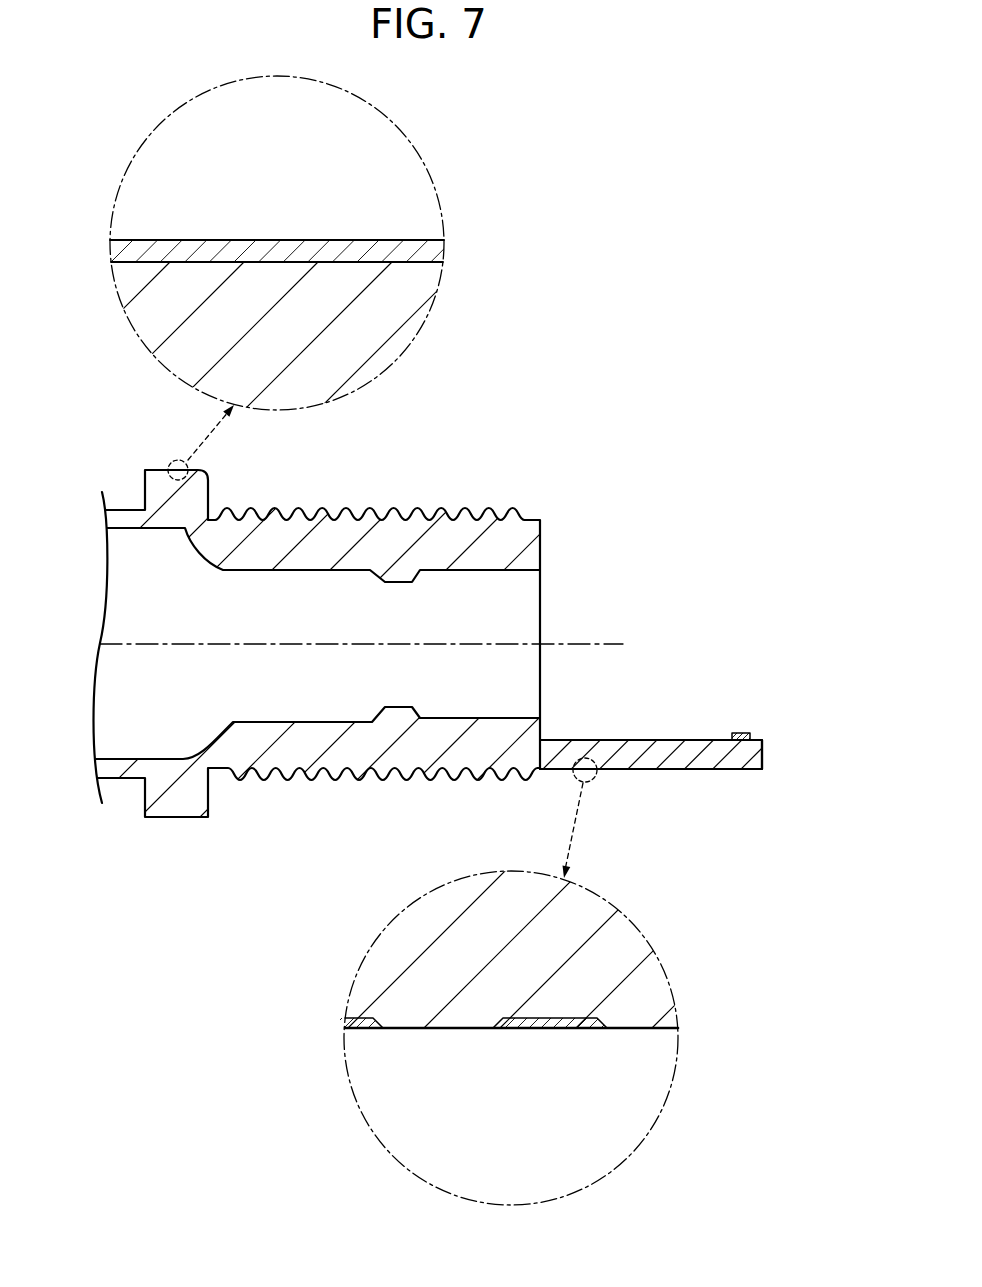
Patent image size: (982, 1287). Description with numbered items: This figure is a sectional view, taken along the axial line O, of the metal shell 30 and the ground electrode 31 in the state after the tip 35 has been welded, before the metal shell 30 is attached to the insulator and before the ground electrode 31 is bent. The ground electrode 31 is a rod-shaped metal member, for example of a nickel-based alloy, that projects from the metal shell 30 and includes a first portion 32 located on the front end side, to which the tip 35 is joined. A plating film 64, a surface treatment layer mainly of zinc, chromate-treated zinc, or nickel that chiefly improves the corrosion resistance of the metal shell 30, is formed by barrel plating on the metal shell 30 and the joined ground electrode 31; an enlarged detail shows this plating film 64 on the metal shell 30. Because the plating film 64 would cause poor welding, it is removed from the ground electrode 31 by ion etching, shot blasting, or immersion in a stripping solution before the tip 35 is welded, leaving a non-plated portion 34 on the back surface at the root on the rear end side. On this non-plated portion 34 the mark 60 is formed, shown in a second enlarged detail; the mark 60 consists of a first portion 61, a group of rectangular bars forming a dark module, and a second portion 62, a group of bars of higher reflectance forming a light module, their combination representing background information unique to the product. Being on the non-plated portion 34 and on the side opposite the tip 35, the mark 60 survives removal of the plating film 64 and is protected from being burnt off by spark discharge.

The metal shell 30 is at (157, 332).
The ground electrode 31 is at (663, 747).
The first portion 32 is at (760, 738).
The non-plated portion 34 is at (557, 772).
The tip 35 is at (735, 732).
The mark 60 is at (471, 1104).
The first portion 61 is at (547, 1031).
The second portion 62 is at (455, 1031).
The plating film 64 is at (268, 252).
The axial line O is at (612, 644).